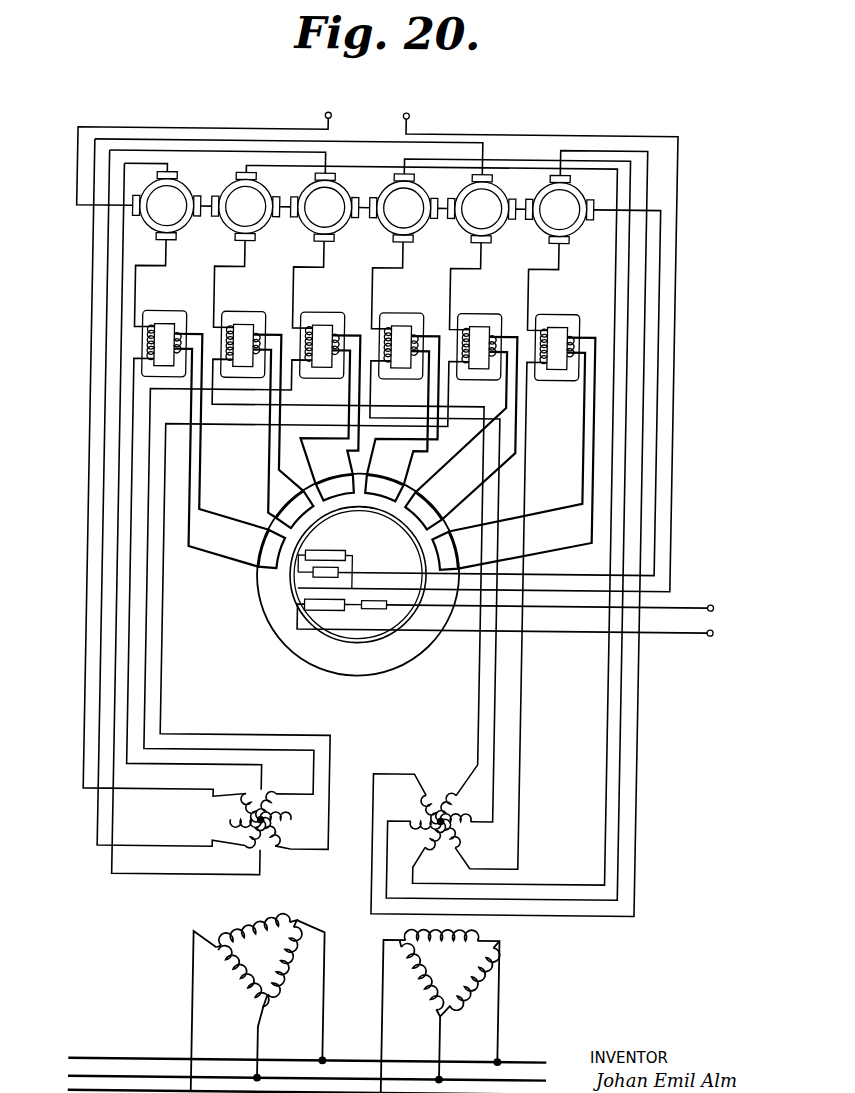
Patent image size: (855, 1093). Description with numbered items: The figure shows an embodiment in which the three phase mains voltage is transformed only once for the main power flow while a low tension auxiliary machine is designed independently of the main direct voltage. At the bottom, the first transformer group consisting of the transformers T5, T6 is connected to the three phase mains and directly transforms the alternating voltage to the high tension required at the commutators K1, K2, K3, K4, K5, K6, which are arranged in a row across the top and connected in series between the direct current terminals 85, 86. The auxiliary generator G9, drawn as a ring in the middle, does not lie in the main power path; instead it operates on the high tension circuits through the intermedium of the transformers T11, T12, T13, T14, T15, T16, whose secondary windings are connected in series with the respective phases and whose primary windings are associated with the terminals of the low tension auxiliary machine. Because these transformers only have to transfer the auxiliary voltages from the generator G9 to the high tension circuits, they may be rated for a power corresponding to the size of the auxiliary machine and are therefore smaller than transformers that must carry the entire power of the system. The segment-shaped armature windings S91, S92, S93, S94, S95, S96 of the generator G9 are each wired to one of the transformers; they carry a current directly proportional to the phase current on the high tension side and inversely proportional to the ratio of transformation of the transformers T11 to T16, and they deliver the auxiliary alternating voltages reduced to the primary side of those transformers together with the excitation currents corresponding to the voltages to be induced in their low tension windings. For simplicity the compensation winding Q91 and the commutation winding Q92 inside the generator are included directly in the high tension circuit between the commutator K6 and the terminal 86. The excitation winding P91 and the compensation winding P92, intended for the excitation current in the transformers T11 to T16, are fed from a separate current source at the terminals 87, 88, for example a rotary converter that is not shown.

The terminal 85 is at (206, 150).
The terminal 86 is at (488, 343).
The separate current source terminal 87 is at (516, 623).
The separate current source terminal 88 is at (560, 607).
The commutator K1 is at (166, 205).
The commutator K2 is at (245, 206).
The commutator K3 is at (324, 207).
The commutator K4 is at (403, 208).
The commutator K5 is at (481, 208).
The commutator K6 is at (559, 209).
The transformer T11 is at (165, 332).
The transformer T12 is at (244, 333).
The transformer T13 is at (323, 334).
The transformer T14 is at (402, 335).
The transformer T15 is at (480, 336).
The transformer T16 is at (558, 336).
The armature winding S91 is at (283, 553).
The armature winding S92 is at (305, 516).
The armature winding S93 is at (341, 494).
The armature winding S94 is at (385, 494).
The armature winding S95 is at (421, 514).
The armature winding S96 is at (462, 549).
The compensation winding Q91 is at (332, 543).
The commutation winding Q92 is at (350, 571).
The excitation winding P91 is at (305, 619).
The compensation winding P92 is at (385, 608).
The auxiliary generator G9 is at (366, 676).
The transformer T5 is at (232, 1001).
The transformer T6 is at (458, 1011).